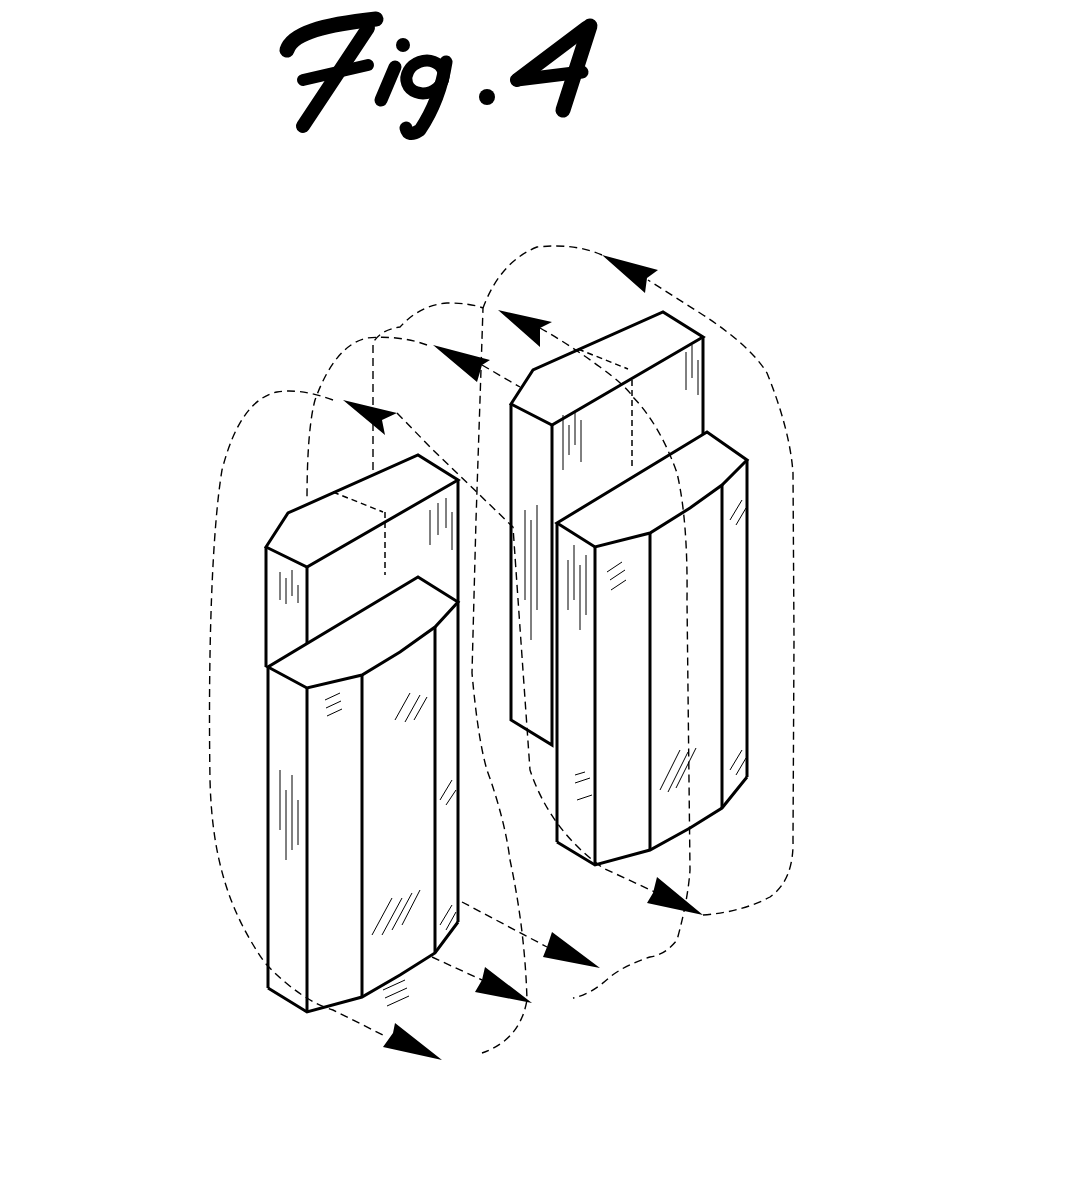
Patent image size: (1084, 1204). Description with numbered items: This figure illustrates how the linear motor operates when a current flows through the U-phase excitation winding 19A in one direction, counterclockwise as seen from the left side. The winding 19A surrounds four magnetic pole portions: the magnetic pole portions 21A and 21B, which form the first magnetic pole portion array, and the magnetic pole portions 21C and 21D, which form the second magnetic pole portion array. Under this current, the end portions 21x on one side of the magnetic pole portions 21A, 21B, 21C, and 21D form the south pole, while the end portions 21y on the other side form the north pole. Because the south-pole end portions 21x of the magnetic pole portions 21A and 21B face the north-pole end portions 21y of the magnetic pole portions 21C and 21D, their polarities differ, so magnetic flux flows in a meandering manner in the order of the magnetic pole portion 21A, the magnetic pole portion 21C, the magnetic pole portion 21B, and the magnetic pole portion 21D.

The excitation winding 19A is at (233, 374).
The magnetic pole portion 21A is at (685, 386).
The magnetic pole portion 21B is at (275, 576).
The magnetic pole portion 21C is at (700, 592).
The magnetic pole portion 21D is at (373, 818).
The end portion on one side 21x is at (677, 332).
The end portion on the other side 21y is at (525, 372).